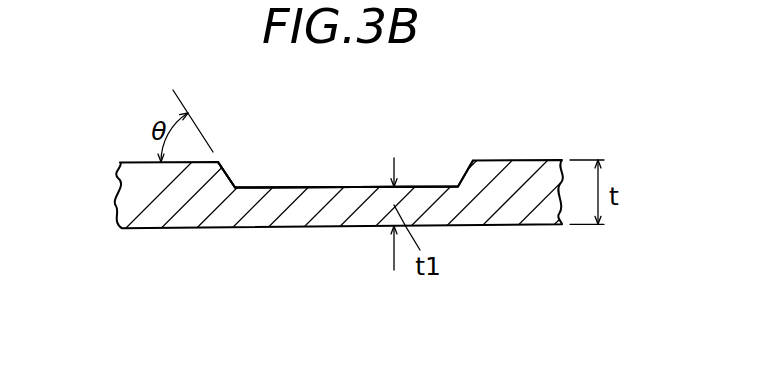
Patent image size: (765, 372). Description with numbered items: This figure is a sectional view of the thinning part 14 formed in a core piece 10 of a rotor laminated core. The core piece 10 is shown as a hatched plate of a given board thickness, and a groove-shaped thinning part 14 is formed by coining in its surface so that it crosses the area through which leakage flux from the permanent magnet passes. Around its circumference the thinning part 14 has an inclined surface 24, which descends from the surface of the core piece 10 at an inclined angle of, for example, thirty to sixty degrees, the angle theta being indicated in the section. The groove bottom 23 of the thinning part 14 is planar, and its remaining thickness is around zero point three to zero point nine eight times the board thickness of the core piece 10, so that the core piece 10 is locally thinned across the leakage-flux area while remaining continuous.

The core piece 10 is at (506, 153).
The thinning part 14 is at (427, 173).
The groove bottom 23 is at (323, 187).
The inclined surface 24 is at (227, 170).